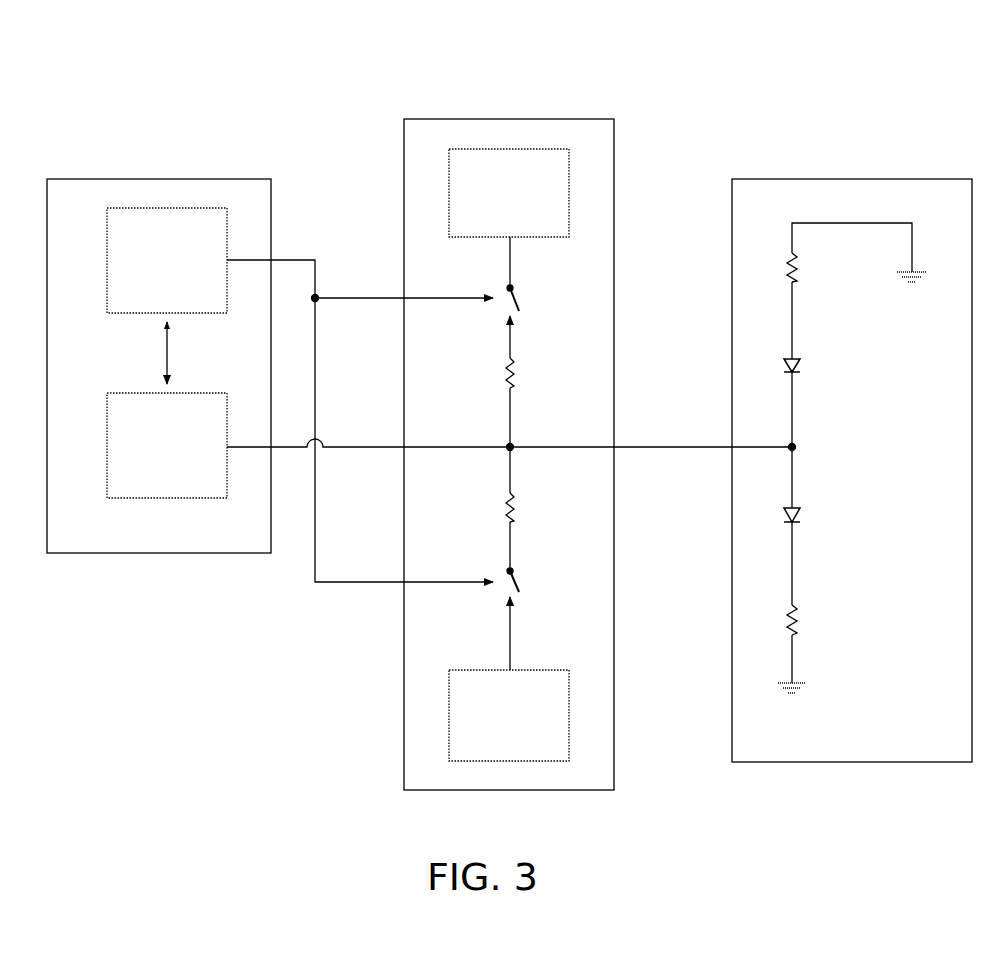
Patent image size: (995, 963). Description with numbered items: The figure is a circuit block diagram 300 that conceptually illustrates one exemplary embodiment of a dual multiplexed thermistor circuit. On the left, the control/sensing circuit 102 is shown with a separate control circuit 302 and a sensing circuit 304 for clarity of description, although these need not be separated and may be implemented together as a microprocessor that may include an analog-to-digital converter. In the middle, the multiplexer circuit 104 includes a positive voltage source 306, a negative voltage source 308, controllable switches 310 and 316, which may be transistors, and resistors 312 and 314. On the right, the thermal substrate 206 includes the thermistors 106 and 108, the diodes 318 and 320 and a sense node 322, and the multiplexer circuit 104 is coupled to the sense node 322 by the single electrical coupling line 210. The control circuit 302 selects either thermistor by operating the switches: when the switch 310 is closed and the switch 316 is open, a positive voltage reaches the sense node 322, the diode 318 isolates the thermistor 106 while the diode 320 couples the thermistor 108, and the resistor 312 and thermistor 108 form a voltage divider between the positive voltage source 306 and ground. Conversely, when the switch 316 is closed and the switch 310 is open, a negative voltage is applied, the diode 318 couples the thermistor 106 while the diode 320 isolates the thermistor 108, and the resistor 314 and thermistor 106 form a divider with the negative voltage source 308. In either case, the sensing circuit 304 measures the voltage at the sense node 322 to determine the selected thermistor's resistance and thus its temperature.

The circuit block diagram 300 is at (250, 60).
The control/sensing circuit 102 is at (76, 179).
The control circuit 302 is at (135, 313).
The sensing circuit 304 is at (135, 498).
The multiplexer circuit 104 is at (494, 119).
The positive voltage source 306 is at (449, 195).
The negative voltage source 308 is at (449, 715).
The controllable switch 310 is at (516, 289).
The resistor 312 is at (516, 386).
The resistor 314 is at (516, 519).
The controllable switch 316 is at (516, 571).
The single electrical coupling line 210 is at (704, 447).
The thermal substrate 206 is at (874, 179).
The thermistor 106 is at (797, 268).
The diode 318 is at (801, 372).
The sense node 322 is at (797, 447).
The diode 320 is at (801, 522).
The thermistor 108 is at (797, 622).